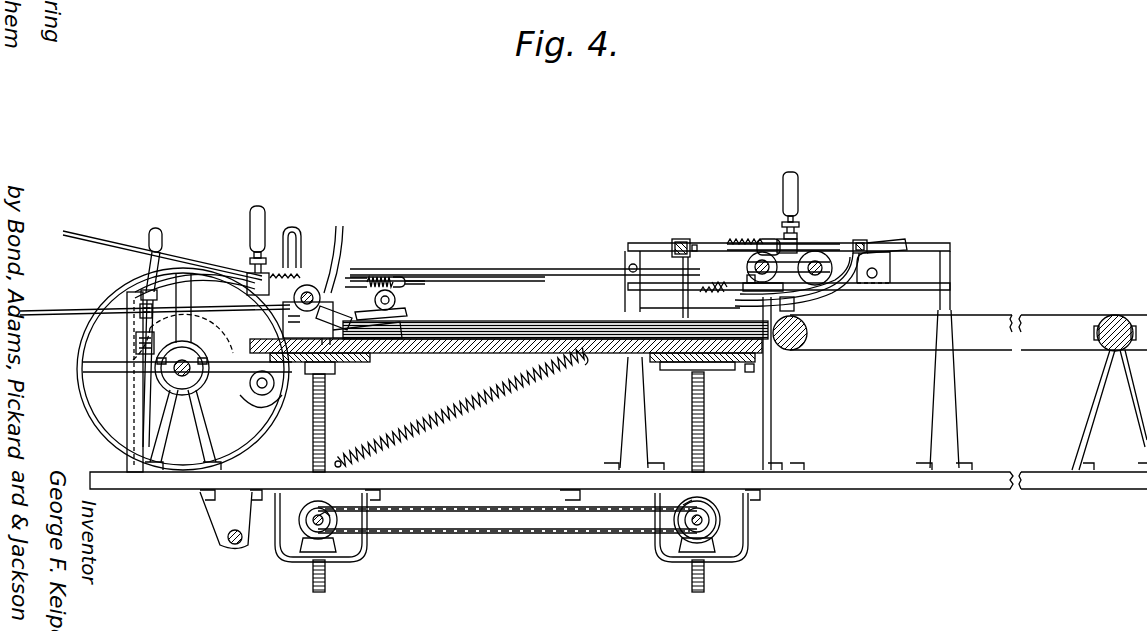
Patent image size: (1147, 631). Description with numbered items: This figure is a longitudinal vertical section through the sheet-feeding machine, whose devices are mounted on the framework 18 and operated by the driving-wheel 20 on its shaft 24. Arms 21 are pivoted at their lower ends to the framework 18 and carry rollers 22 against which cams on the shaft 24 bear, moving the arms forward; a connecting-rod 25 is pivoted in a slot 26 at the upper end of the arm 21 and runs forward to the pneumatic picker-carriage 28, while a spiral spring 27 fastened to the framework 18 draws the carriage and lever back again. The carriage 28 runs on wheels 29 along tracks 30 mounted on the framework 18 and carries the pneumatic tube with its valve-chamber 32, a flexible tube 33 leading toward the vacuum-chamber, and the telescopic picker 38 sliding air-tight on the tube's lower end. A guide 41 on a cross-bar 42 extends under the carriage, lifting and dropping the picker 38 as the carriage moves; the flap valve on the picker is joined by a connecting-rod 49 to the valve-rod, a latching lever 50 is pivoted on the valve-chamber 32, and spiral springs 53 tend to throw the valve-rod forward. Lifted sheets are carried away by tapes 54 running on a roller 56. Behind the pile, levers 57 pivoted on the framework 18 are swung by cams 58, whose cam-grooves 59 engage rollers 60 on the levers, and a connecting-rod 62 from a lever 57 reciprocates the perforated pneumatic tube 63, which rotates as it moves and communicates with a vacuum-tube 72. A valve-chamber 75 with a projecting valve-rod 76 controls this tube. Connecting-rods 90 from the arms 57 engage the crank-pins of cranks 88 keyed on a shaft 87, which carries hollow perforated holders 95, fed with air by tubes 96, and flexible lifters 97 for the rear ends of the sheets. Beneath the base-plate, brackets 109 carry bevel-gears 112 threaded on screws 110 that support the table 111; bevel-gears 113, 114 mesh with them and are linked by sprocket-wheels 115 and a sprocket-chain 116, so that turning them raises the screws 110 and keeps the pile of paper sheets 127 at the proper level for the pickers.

The framework 18 is at (568, 470).
The driving-wheel 20 is at (265, 432).
The arms 21 is at (258, 458).
The rollers 22 is at (262, 396).
The shaft 24 is at (198, 392).
The connecting-rod 25 is at (590, 290).
The slot 26 is at (294, 240).
The spiral spring 27 is at (466, 408).
The pneumatic picker-carriage 28 is at (815, 273).
The wheels 29 is at (753, 237).
The tracks 30 is at (648, 243).
The valve-chamber 32 is at (808, 232).
The flexible tube 33 is at (800, 205).
The telescopic tube or picker 38 is at (796, 304).
The guide or track 41 is at (887, 267).
The cross-bar 42 is at (870, 242).
The connecting-rod 49 is at (722, 250).
The lever 50 is at (795, 250).
The spiral springs 53 is at (768, 247).
The tapes 54 is at (988, 320).
The roller 56 is at (1117, 315).
The levers 57 is at (163, 240).
The cams 58 is at (181, 355).
The cam-grooves 59 is at (136, 338).
The rollers 60 is at (150, 387).
The connecting-rod 62 is at (76, 311).
The pneumatic tube 63 is at (396, 295).
The vacuum-tube 72 is at (270, 215).
The valve-chamber 75 is at (230, 278).
The valve-rod 76 is at (421, 280).
The shaft 87 is at (311, 285).
The cranks 88 is at (346, 232).
The connecting-rods 90 is at (118, 243).
The holders 95 is at (350, 322).
The tubes 96 is at (345, 252).
The lifters 97 is at (324, 339).
The brackets 109 is at (278, 553).
The screws 110 is at (326, 434).
The table 111 is at (556, 353).
The bevel-gears 112 is at (306, 540).
The bevel-gear 113 is at (722, 518).
The bevel-gear 114 is at (333, 515).
The sprocket-wheels 115 is at (313, 524).
The sprocket-chain 116 is at (507, 536).
The pile of paper sheets 127 is at (528, 338).